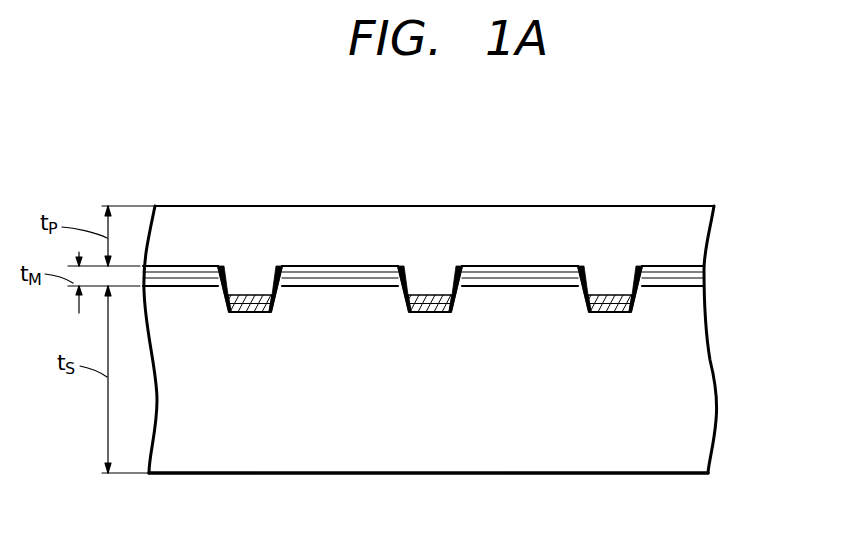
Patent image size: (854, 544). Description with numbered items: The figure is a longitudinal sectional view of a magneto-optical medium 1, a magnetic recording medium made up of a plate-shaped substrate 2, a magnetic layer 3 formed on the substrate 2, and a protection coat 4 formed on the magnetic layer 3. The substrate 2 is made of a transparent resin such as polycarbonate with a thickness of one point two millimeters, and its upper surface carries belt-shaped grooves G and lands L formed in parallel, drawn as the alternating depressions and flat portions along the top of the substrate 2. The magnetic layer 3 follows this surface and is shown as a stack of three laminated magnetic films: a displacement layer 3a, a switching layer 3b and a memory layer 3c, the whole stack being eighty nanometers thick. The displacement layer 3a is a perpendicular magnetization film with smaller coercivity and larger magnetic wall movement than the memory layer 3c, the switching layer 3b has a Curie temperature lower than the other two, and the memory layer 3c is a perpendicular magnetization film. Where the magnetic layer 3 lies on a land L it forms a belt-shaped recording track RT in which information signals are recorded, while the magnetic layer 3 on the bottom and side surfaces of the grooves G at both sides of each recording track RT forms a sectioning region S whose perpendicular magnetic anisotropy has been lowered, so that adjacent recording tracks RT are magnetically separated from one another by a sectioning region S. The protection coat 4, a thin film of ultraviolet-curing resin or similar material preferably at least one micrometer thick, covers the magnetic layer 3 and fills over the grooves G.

The magneto-optical medium 1 is at (682, 180).
The substrate 2 is at (705, 398).
The magnetic layer 3 is at (798, 233).
The displacement layer 3a is at (704, 284).
The switching layer 3b is at (704, 276).
The memory layer 3c is at (704, 266).
The protection coat 4 is at (700, 219).
The sectioning region S is at (244, 294).
The groove G is at (253, 283).
The land L is at (322, 290).
The recording track RT is at (351, 278).